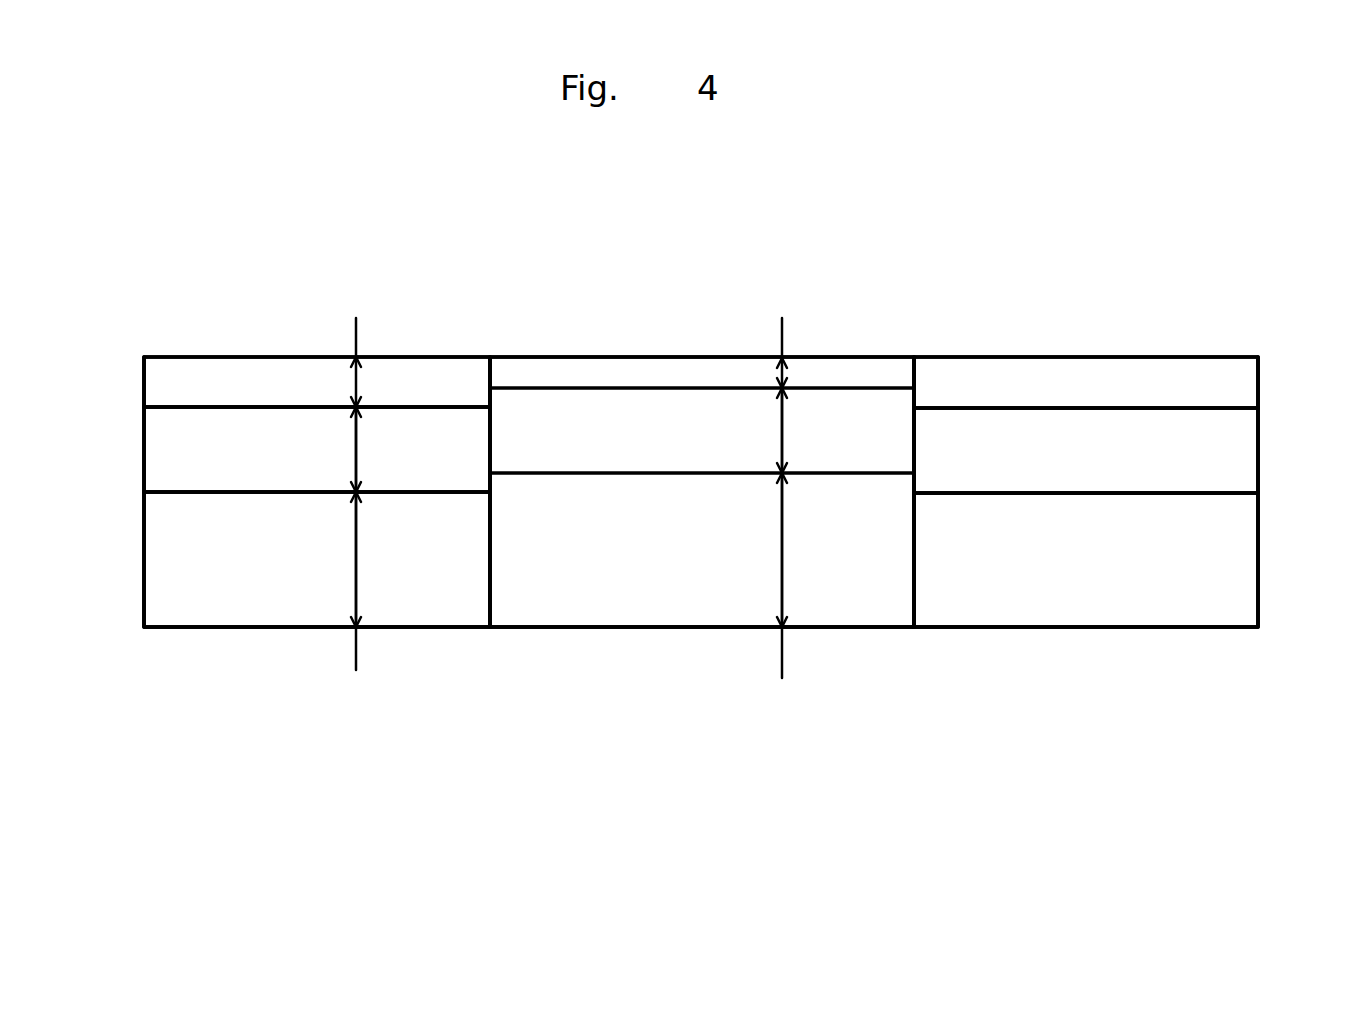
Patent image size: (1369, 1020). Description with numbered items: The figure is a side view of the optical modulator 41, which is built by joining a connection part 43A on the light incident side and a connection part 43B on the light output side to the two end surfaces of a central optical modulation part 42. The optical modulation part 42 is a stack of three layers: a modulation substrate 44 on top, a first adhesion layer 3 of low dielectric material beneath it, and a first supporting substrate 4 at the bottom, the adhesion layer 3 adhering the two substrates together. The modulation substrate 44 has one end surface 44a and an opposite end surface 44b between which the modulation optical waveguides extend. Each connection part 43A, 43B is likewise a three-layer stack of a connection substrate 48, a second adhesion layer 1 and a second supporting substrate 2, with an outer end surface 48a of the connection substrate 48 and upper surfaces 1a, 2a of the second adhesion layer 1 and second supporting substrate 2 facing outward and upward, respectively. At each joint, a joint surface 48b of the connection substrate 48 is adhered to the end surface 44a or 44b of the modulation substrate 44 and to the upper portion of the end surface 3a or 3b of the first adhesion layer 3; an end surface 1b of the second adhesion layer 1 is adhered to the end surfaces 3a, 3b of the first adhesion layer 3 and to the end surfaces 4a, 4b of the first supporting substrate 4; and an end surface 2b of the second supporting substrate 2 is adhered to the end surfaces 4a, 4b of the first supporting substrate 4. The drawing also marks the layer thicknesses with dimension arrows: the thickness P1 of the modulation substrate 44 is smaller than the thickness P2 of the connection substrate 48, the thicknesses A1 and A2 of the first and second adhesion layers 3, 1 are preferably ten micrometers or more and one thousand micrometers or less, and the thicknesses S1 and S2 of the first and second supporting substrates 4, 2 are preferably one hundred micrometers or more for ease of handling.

The optical modulator 41 is at (1170, 318).
The optical modulation part 42 is at (731, 352).
The connection part 43A is at (210, 350).
The connection part 43B is at (990, 354).
The modulation substrate 44 is at (592, 370).
The end surface 44a is at (488, 380).
The end surface 44b is at (918, 372).
The connection substrate 48 is at (265, 380).
The outer end surface of connection substrate 48a is at (142, 373).
The joint surface 48b is at (491, 377).
The second adhesion layer 1 is at (160, 466).
The upper surface of second adhesion layer 1a is at (143, 432).
The end surface of second adhesion layer 1b is at (491, 443).
The second supporting substrate 2 is at (180, 582).
The upper surface of second supporting substrate 2a is at (143, 535).
The end surface of second supporting substrate 2b is at (491, 548).
The first adhesion layer 3 is at (683, 382).
The end surface of first adhesion layer 3a is at (490, 428).
The end surface of first adhesion layer 3b is at (916, 425).
The first supporting substrate 4 is at (675, 603).
The end surface of first supporting substrate 4a is at (490, 530).
The end surface of first supporting substrate 4b is at (916, 520).
The thickness of modulation substrate P1 is at (783, 375).
The thickness of connection substrate P2 is at (360, 378).
The thickness of first adhesion layer A1 is at (783, 430).
The thickness of second adhesion layer A2 is at (358, 455).
The thickness of first supporting substrate S1 is at (780, 548).
The thickness of second supporting substrate S2 is at (358, 577).